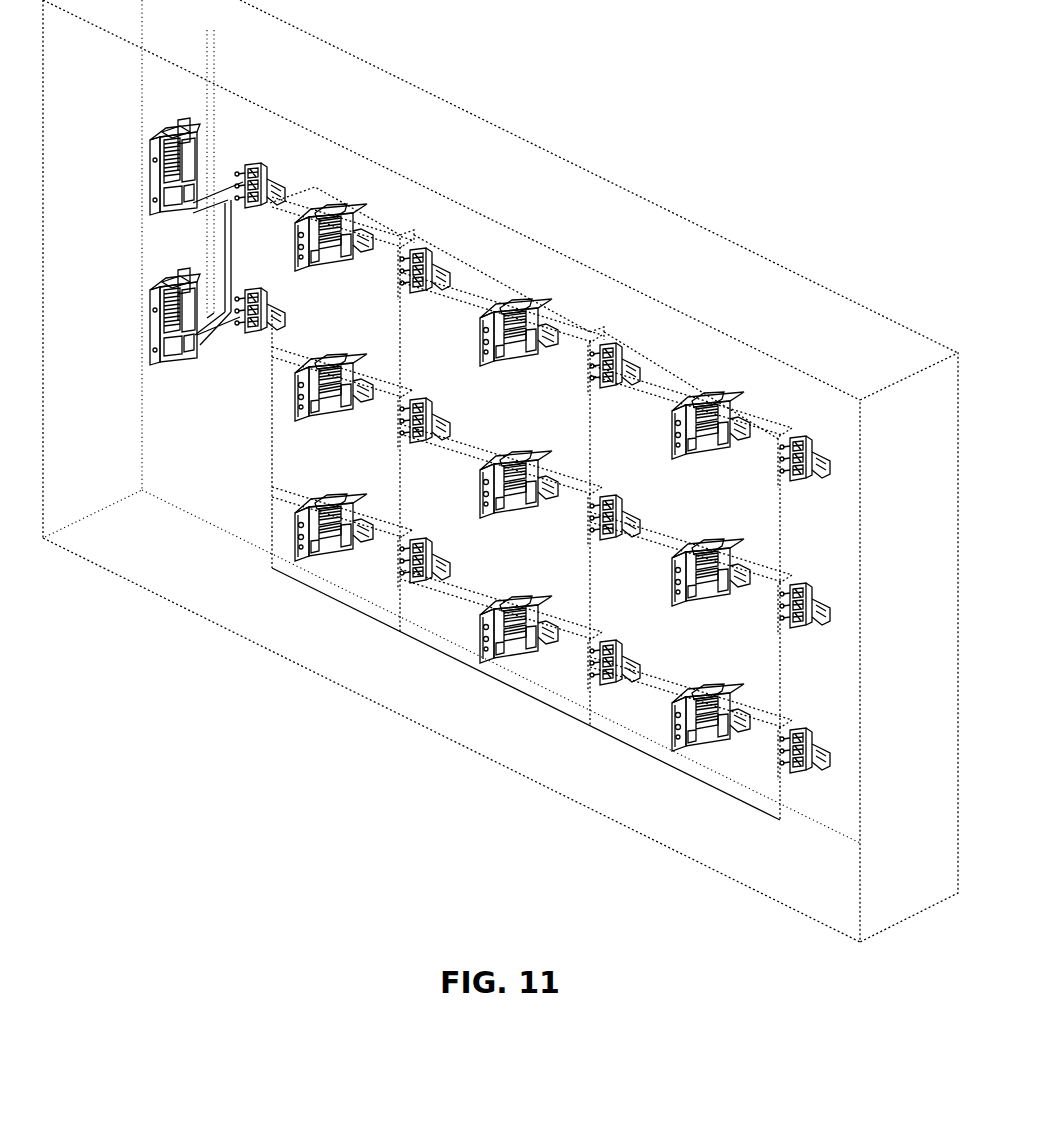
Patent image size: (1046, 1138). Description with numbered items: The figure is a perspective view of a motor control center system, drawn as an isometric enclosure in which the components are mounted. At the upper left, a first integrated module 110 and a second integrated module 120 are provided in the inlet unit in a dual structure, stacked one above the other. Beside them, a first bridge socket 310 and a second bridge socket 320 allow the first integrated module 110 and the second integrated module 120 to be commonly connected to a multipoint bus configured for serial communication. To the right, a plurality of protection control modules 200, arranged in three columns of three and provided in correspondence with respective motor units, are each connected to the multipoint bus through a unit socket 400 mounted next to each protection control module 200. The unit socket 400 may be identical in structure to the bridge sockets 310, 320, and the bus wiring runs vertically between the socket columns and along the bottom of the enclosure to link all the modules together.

The first integrated module 110 is at (180, 141).
The second integrated module 120 is at (178, 291).
The protection control module 200 is at (340, 263).
The first bridge socket 310 is at (254, 165).
The second bridge socket 320 is at (254, 290).
The unit socket 400 is at (424, 251).